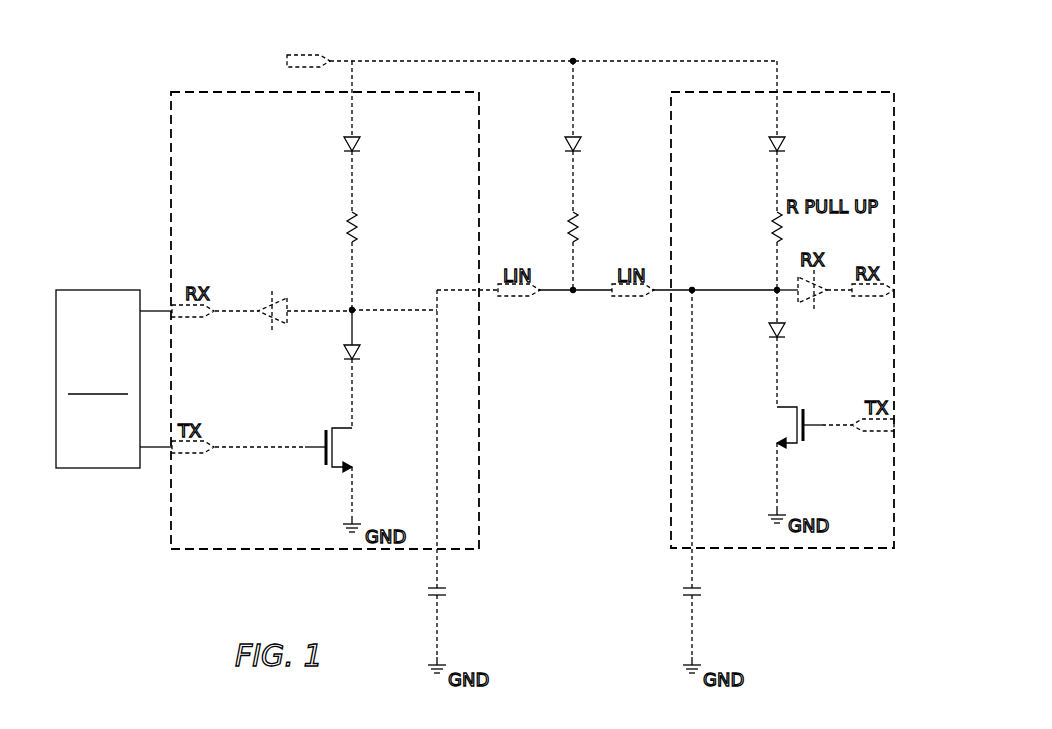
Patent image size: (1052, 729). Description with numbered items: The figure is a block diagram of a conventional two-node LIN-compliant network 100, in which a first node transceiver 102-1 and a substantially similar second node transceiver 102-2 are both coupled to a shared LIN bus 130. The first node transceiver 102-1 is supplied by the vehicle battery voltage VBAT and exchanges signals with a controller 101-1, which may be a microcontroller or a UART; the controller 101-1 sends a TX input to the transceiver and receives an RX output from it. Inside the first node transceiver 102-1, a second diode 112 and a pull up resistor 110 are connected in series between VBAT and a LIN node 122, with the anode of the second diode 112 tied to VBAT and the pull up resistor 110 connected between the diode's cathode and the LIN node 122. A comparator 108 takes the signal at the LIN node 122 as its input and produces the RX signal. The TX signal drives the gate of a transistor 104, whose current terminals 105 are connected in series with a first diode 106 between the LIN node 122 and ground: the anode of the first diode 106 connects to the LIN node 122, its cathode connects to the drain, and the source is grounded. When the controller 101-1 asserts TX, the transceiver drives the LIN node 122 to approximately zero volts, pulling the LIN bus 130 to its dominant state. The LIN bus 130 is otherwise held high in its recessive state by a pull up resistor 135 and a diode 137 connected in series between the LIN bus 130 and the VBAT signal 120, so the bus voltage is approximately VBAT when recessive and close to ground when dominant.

The LIN-compliant network 100 is at (100, 70).
The controller 101-1 is at (98, 379).
The first node transceiver 102-1 is at (196, 91).
The second node transceiver 102-2 is at (851, 91).
The transistor 104 is at (322, 455).
The current terminals 105 is at (355, 386).
The first diode 106 is at (347, 352).
The comparator 108 is at (264, 316).
The pull up resistor 110 is at (348, 224).
The second diode 112 is at (345, 146).
The VBAT signal 120 is at (613, 61).
The LIN node 122 is at (355, 308).
The LIN bus 130 is at (578, 293).
The pull up resistor 135 is at (569, 224).
The diode 137 is at (566, 146).